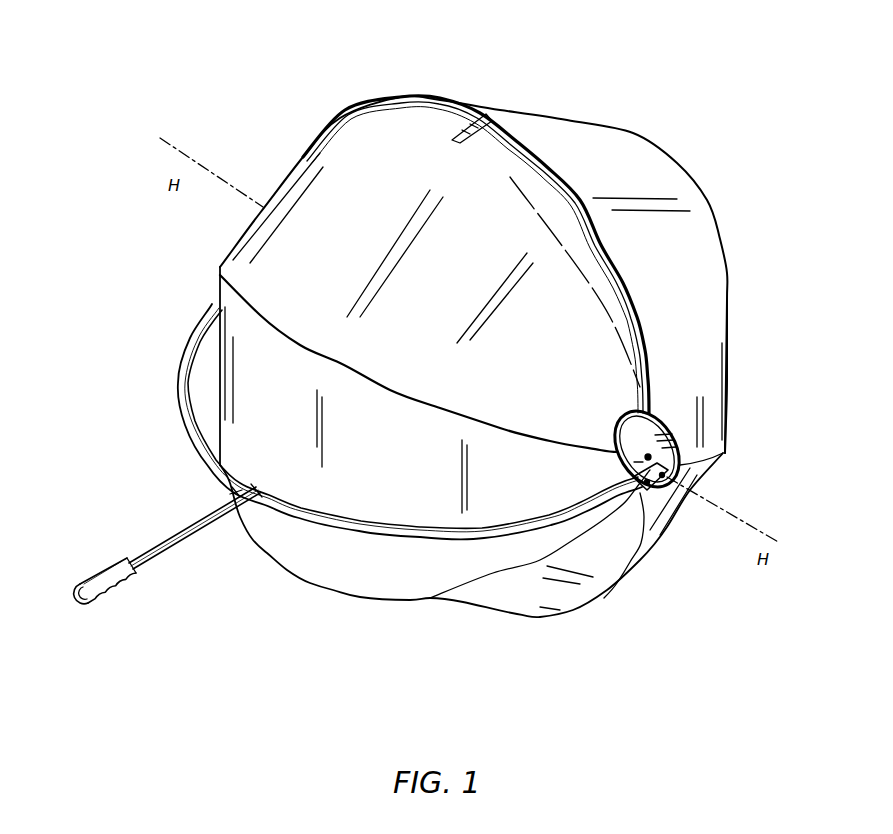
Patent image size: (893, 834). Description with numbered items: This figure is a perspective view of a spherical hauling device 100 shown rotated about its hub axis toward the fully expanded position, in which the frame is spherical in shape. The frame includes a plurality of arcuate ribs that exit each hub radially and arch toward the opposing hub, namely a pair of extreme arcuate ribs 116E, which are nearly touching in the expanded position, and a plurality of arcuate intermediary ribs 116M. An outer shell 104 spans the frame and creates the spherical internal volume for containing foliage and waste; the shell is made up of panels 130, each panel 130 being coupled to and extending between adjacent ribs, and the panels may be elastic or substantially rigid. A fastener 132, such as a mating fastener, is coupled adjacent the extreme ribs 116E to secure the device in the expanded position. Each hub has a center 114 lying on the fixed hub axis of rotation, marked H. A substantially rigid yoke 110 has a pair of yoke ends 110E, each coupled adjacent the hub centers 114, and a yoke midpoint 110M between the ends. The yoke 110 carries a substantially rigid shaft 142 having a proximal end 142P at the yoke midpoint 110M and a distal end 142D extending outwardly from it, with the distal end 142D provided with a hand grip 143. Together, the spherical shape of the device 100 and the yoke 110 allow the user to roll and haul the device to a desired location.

The spherical hauling device 100 is at (203, 72).
The outer shell 104 is at (668, 124).
The yoke 110 is at (313, 527).
The yoke ends 110E is at (645, 495).
The yoke midpoint 110M is at (237, 492).
The hub center 114 is at (640, 445).
The extreme arcuate ribs 116E is at (437, 97).
The intermediary arcuate ribs 116M is at (725, 303).
The panel 130 is at (670, 180).
The fastener 132 is at (477, 112).
The shaft 142 is at (150, 565).
The distal end 142D is at (140, 553).
The proximal end 142P is at (250, 510).
The hand grip 143 is at (88, 598).